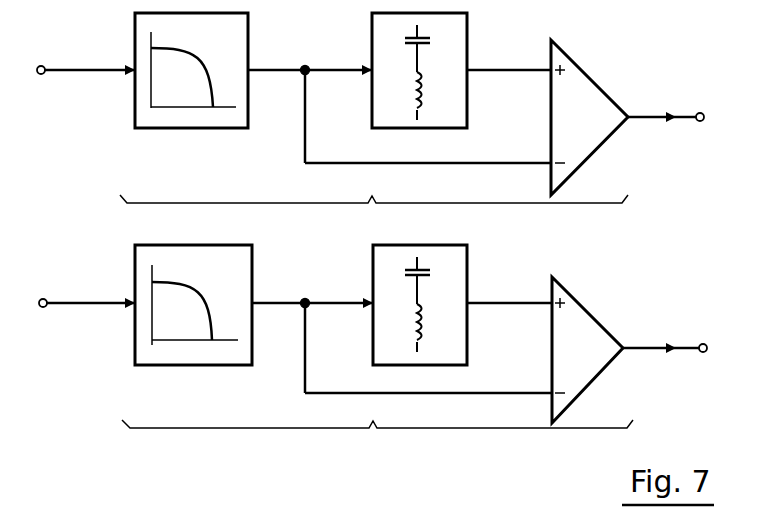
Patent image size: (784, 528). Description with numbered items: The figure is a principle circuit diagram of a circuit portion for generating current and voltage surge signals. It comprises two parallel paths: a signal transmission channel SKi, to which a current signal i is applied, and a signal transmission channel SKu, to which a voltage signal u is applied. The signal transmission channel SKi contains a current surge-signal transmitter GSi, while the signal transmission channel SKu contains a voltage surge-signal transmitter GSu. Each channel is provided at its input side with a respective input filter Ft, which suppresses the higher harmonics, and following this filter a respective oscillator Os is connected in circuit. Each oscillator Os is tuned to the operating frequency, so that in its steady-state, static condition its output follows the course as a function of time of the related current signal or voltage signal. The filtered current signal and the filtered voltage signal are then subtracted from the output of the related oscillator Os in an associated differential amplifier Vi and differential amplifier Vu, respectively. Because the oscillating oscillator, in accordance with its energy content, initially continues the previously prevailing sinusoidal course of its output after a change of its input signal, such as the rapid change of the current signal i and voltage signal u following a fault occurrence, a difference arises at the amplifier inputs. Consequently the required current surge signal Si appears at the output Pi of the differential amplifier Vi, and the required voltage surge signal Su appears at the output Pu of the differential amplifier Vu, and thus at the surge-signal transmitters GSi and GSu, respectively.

The current signal i is at (78, 71).
The voltage signal u is at (77, 303).
The input filter Ft is at (140, 43).
The signal transmission channel SKi is at (326, 46).
The signal transmission channel SKu is at (335, 285).
The oscillator Os is at (460, 48).
The differential amplifier Vi is at (585, 83).
The differential amplifier Vu is at (578, 318).
The current surge signal Si is at (668, 106).
The voltage surge signal Su is at (668, 340).
The output Pi is at (712, 118).
The output Pu is at (719, 349).
The current surge-signal transmitter GSi is at (374, 214).
The voltage surge-signal transmitter GSu is at (377, 443).